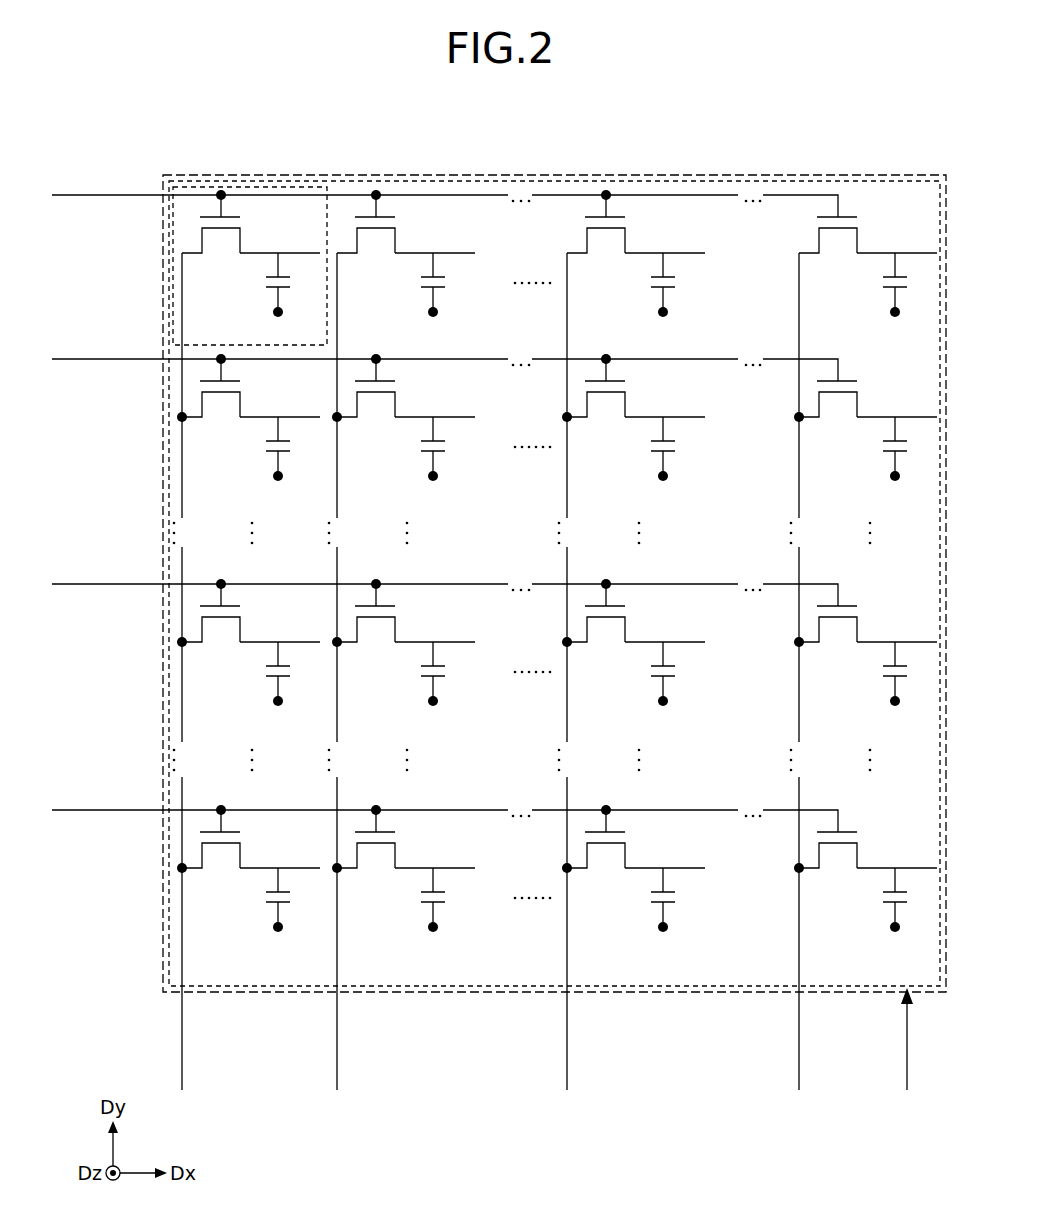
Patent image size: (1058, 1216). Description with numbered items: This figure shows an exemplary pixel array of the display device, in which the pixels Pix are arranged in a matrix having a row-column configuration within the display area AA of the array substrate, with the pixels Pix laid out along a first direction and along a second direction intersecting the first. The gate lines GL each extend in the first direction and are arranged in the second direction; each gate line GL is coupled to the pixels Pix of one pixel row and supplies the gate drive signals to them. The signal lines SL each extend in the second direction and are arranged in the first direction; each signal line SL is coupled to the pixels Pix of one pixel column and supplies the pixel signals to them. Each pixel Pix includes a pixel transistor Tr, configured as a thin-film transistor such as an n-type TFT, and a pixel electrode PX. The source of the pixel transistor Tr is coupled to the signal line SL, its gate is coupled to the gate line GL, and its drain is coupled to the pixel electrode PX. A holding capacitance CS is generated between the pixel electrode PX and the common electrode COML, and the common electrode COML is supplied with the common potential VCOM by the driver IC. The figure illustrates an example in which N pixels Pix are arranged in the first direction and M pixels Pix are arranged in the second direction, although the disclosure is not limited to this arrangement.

The display area AA is at (553, 175).
The common electrode COML is at (637, 181).
The pixel Pix is at (192, 183).
The pixel transistor Tr is at (231, 216).
The gate line GL is at (90, 811).
The signal line SL is at (180, 1004).
The pixel electrode PX is at (588, 548).
The holding capacitance CS is at (573, 590).
The common potential VCOM is at (587, 698).